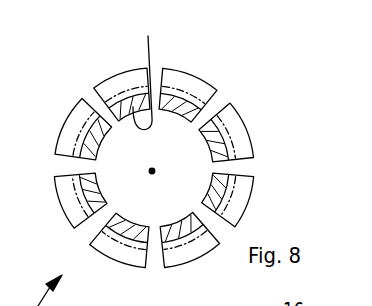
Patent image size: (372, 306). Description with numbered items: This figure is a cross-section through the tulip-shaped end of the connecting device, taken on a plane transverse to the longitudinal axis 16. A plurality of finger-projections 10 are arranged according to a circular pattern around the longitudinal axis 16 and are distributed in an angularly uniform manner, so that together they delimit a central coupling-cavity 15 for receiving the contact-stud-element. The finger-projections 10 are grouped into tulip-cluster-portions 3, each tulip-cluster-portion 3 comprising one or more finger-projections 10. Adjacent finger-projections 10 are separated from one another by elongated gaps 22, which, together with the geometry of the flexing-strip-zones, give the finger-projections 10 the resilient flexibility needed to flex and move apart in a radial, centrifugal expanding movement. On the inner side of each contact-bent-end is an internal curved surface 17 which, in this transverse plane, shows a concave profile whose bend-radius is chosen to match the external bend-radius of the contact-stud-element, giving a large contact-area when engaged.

The tulip-cluster-portion 3 is at (199, 148).
The finger-projection 10 is at (182, 112).
The coupling-cavity 15 is at (173, 165).
The longitudinal axis 16 is at (152, 171).
The internal curved surface 17 is at (148, 36).
The elongated gap 22 is at (103, 117).